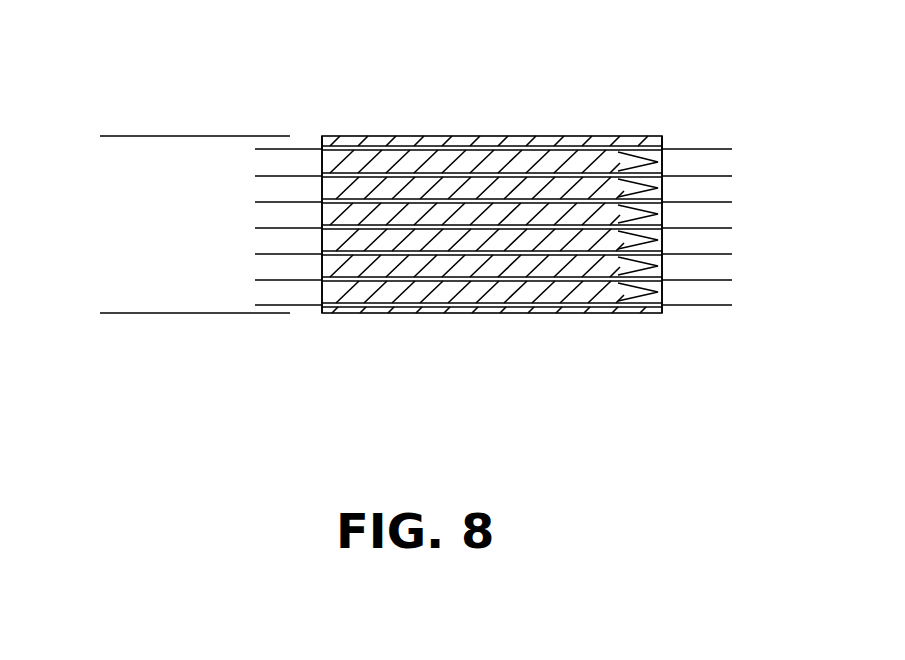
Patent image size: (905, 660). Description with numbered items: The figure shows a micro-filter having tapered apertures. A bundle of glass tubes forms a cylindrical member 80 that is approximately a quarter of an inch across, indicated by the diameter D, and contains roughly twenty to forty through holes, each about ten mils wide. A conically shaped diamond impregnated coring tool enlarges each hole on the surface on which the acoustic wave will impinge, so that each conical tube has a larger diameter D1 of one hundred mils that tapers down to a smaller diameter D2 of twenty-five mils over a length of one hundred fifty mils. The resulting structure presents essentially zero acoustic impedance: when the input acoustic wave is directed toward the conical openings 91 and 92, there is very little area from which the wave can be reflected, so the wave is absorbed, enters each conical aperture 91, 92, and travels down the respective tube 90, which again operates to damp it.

The cylindrical member 80 is at (664, 89).
The tube 90 is at (500, 128).
The conical opening 91 is at (322, 149).
The conical opening 92 is at (662, 136).
The diameter D is at (180, 68).
The diameter D1 is at (663, 144).
The diameter D2 is at (324, 150).